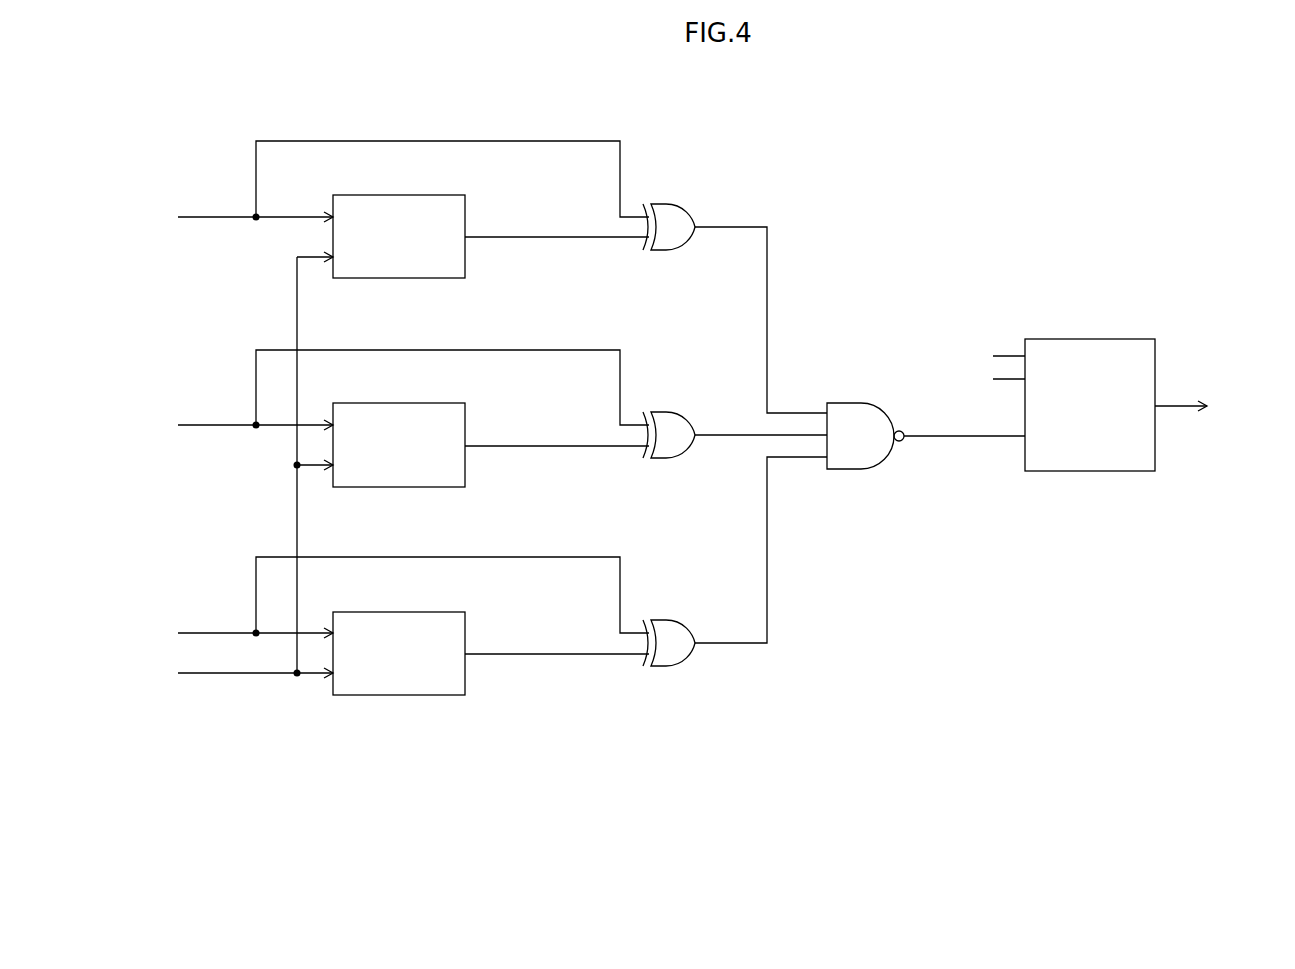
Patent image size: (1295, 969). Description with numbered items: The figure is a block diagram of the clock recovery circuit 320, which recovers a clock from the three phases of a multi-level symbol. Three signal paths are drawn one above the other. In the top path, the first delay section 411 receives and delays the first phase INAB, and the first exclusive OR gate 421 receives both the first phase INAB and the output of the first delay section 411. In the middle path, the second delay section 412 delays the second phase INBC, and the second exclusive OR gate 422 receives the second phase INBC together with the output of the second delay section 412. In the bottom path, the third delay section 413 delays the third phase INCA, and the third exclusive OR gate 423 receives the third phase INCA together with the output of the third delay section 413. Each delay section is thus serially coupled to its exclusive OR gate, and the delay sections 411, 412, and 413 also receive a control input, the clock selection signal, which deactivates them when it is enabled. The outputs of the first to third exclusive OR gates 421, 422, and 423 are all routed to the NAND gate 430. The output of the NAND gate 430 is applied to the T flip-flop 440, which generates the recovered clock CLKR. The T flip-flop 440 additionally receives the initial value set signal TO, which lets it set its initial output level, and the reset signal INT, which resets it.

The clock recovery circuit 320 is at (199, 104).
The first delay section 411 is at (428, 195).
The second delay section 412 is at (428, 403).
The third delay section 413 is at (428, 612).
The first exclusive OR gate 421 is at (684, 208).
The second exclusive OR gate 422 is at (684, 416).
The third exclusive OR gate 423 is at (684, 624).
The NAND gate 430 is at (884, 409).
The T flip-flop 440 is at (1118, 339).